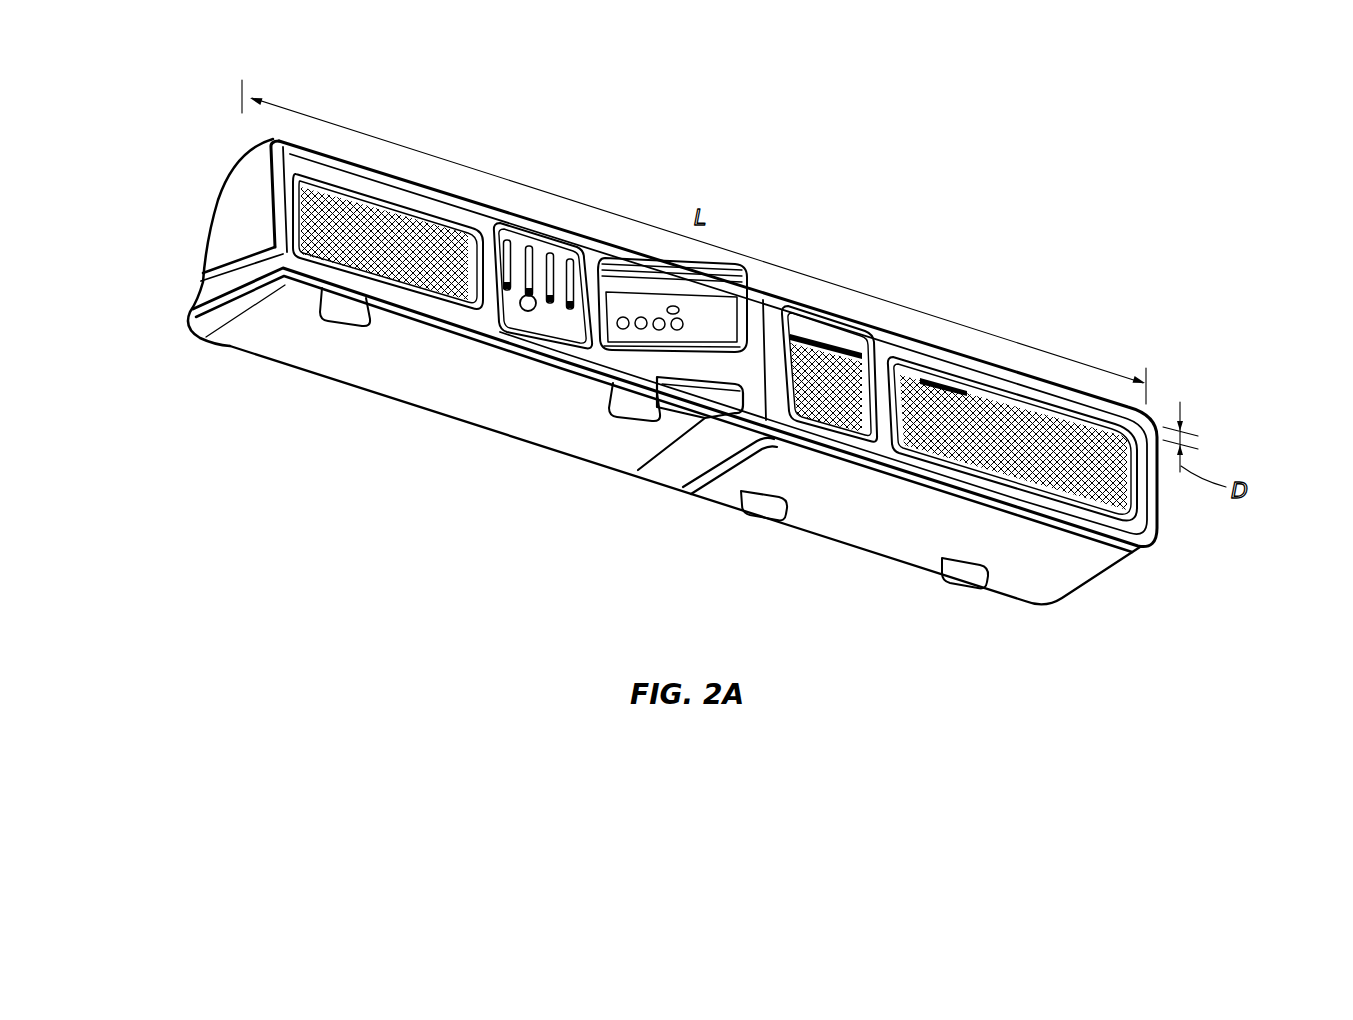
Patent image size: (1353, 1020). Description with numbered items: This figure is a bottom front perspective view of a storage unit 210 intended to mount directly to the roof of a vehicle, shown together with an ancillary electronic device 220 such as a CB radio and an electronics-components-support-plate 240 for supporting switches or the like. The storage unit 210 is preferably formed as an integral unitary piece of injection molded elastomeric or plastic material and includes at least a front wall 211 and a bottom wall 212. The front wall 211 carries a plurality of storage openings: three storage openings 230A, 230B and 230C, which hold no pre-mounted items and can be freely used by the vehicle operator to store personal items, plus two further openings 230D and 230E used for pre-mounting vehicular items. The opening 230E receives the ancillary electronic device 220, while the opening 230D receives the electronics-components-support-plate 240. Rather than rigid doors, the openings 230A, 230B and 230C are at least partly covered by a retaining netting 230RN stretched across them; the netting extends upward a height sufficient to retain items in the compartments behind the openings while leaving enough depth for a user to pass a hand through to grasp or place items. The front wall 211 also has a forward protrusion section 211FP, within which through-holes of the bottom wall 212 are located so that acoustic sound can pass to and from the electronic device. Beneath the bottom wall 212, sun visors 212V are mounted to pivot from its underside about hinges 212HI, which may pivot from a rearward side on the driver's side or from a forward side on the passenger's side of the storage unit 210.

The storage unit 210 is at (136, 186).
The front wall 211 is at (957, 357).
The forward protrusion section 211FP is at (720, 262).
The bottom wall 212 is at (667, 470).
The sun visor 212V is at (373, 340).
The hinge 212HI is at (326, 318).
The ancillary electronic device 220 is at (713, 323).
The storage opening 230A is at (470, 213).
The storage opening 230B is at (822, 362).
The storage opening 230C is at (985, 437).
The storage opening 230D is at (547, 307).
The storage opening 230E is at (623, 340).
The retaining netting 230RN is at (327, 210).
The electronics-components-support-plate 240 is at (503, 352).